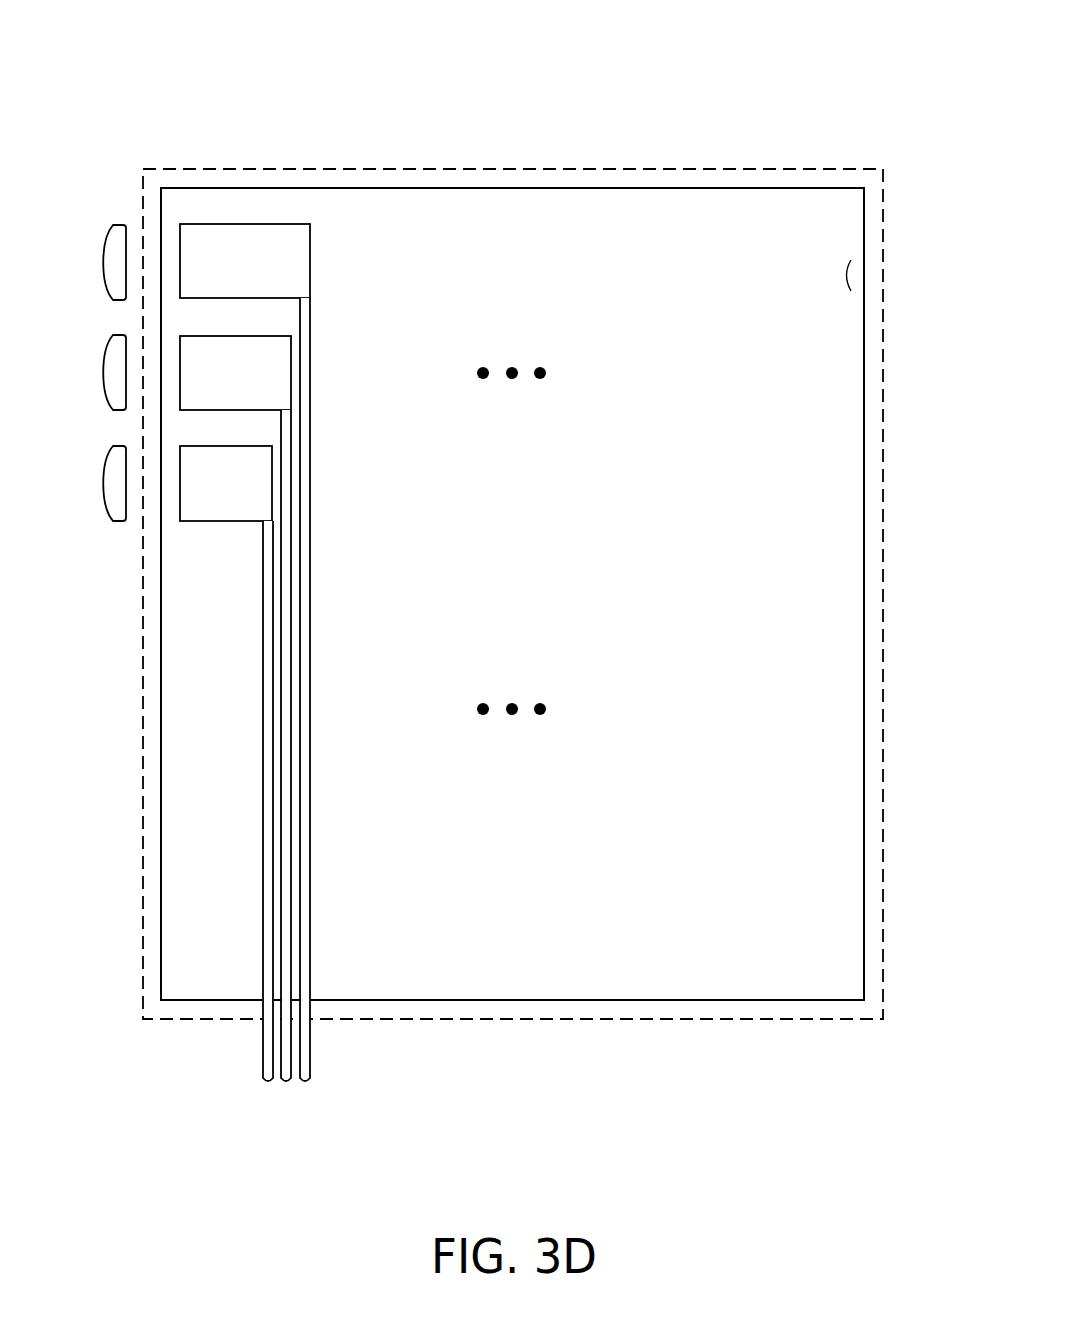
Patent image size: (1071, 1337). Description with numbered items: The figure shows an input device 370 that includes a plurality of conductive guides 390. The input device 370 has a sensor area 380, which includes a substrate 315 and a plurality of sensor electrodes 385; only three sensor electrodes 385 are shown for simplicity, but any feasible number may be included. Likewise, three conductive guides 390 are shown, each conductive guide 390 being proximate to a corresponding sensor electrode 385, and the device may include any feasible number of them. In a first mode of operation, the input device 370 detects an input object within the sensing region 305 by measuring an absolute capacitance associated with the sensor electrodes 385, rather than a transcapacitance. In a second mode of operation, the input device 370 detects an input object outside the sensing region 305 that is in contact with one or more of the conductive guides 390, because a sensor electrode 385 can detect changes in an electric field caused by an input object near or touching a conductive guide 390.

The input device 370 is at (776, 51).
The sensing region 305 is at (853, 168).
The sensor area 380 is at (670, 187).
The substrate 315 is at (846, 275).
The sensor electrode 385 is at (245, 652).
The conductive guide 390 is at (103, 251).